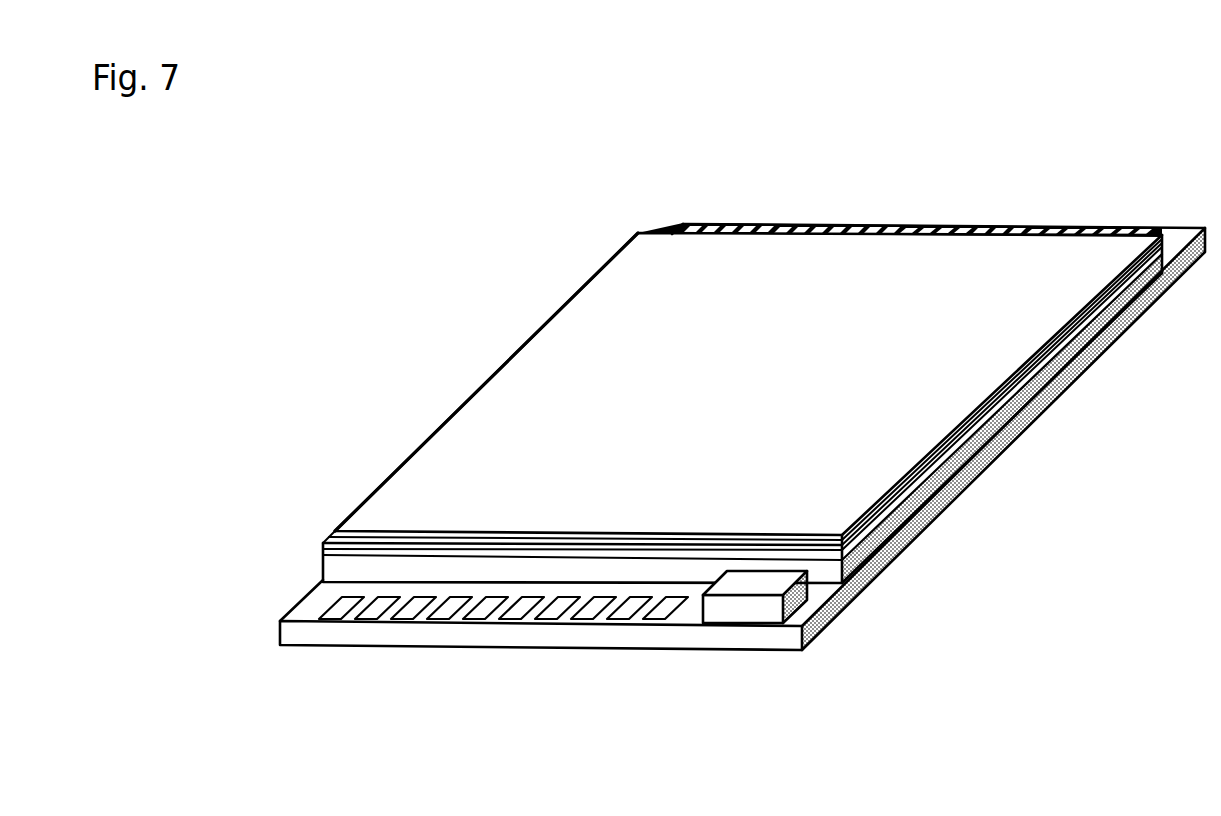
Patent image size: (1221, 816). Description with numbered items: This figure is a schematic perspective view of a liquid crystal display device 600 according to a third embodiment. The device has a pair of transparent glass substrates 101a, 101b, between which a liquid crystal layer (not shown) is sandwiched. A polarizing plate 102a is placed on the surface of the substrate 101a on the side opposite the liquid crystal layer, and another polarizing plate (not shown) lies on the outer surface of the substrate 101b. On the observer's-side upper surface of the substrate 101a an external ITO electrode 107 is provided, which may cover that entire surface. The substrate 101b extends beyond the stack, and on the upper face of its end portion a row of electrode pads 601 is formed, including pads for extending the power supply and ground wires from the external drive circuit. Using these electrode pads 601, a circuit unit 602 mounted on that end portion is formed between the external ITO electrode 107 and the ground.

The liquid crystal display device 600 is at (363, 184).
The transparent glass substrate 101a is at (672, 409).
The transparent glass substrate 101b is at (713, 486).
The polarizing plate 102a is at (748, 384).
The external ITO electrode 107 is at (710, 399).
The electrode pads 601 is at (740, 501).
The circuit unit 602 is at (787, 600).